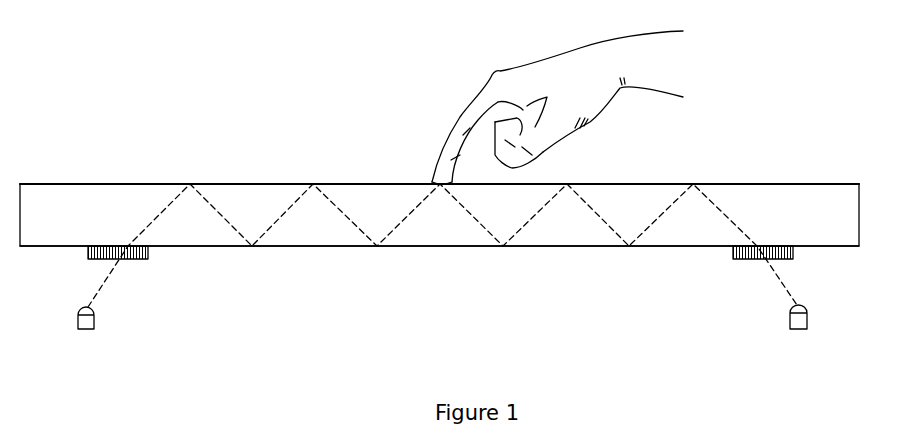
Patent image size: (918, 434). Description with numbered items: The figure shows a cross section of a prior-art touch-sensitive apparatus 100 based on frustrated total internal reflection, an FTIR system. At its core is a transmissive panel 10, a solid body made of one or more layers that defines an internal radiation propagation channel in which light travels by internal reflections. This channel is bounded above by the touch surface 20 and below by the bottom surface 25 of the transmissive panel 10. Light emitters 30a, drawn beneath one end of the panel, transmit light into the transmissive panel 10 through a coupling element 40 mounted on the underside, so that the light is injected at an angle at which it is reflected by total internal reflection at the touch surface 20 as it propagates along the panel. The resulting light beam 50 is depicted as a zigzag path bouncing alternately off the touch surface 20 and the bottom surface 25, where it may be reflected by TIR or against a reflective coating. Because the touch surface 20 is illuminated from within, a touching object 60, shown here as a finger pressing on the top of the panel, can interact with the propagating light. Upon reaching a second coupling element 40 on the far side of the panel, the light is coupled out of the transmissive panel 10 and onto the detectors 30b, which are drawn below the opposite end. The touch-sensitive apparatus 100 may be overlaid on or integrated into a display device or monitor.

The touch-sensitive apparatus 100 is at (456, 239).
The transmissive panel 10 is at (310, 233).
The touch surface 20 is at (170, 183).
The bottom surface 25 is at (428, 245).
The light beam 50 is at (235, 232).
The coupling element 40 is at (137, 258).
The emitters 30a is at (87, 330).
The detectors 30b is at (808, 325).
The touching object 60 is at (468, 110).